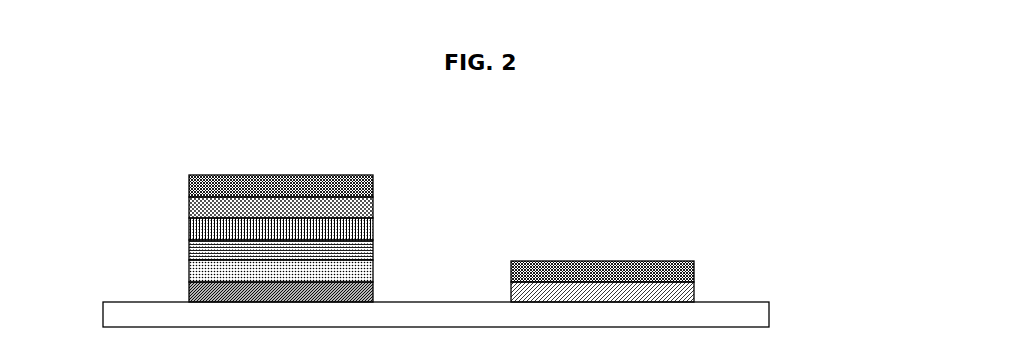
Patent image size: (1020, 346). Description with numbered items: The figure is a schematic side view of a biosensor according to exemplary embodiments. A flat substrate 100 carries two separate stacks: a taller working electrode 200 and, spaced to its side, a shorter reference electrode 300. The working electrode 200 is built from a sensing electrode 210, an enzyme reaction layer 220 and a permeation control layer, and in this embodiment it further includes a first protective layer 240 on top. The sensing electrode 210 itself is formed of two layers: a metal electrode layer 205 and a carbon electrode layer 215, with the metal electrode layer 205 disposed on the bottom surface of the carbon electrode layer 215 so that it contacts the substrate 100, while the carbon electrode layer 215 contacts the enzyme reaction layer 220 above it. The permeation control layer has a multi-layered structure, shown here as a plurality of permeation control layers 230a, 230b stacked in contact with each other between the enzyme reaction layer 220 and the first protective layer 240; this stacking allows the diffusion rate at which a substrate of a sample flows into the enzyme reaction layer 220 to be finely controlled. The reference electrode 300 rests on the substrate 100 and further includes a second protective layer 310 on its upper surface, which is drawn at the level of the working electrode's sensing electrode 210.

The substrate 100 is at (769, 313).
The working electrode 200 is at (272, 152).
The metal electrode layer 205 is at (373, 292).
The sensing electrode 210 is at (362, 258).
The carbon electrode layer 215 is at (373, 270).
The enzyme reaction layer 220 is at (196, 247).
The permeation control layer 230a is at (199, 238).
The permeation control layer 230b is at (200, 212).
The first protective layer 240 is at (198, 189).
The reference electrode 300 is at (694, 290).
The second protective layer 310 is at (694, 268).